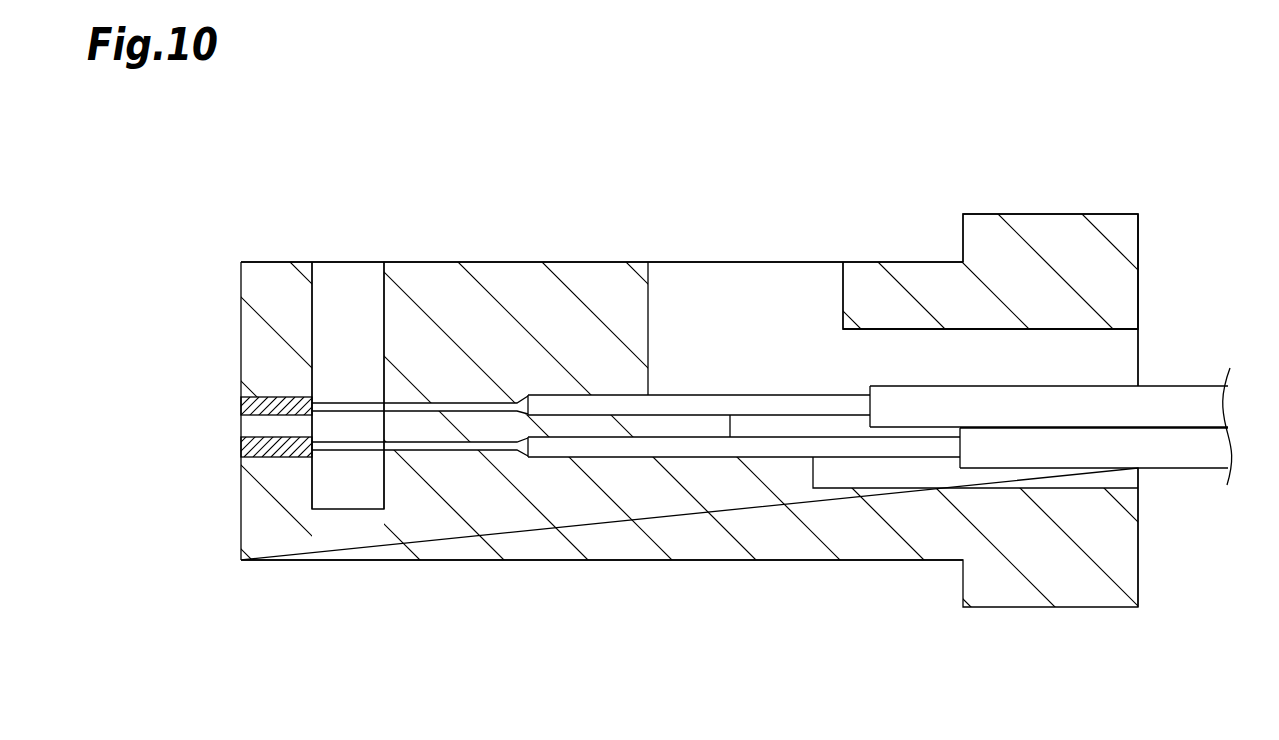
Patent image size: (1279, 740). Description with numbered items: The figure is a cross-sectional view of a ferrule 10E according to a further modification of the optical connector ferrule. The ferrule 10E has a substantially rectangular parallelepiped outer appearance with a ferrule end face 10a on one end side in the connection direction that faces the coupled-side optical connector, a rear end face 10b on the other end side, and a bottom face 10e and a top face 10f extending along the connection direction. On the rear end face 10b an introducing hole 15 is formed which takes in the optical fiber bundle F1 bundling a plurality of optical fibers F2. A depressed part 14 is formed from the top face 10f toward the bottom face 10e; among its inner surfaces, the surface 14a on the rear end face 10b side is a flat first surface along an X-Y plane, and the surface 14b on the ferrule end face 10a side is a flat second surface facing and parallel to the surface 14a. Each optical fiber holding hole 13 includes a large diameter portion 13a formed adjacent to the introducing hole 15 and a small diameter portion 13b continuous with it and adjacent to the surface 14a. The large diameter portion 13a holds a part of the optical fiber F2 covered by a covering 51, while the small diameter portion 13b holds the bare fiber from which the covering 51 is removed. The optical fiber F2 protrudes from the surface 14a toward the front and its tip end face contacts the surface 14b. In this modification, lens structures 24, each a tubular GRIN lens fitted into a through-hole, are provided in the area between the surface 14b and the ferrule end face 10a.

The ferrule end face 10a is at (242, 509).
The rear end face 10b is at (1138, 253).
The bottom face 10e is at (622, 560).
The top face 10f is at (601, 262).
The ferrule 10E is at (1072, 208).
The optical fiber holding hole 13 is at (636, 531).
The large diameter portion 13a is at (547, 405).
The small diameter portion 13b is at (408, 407).
The depressed part 14 is at (372, 336).
The surface (first surface) 14a is at (384, 293).
The surface (second surface) 14b is at (313, 326).
The introducing hole 15 is at (1118, 365).
The lens structure 24 is at (249, 447).
The covering 51 is at (792, 444).
The optical fiber bundle F1 is at (1183, 381).
The optical fiber F2 is at (709, 431).